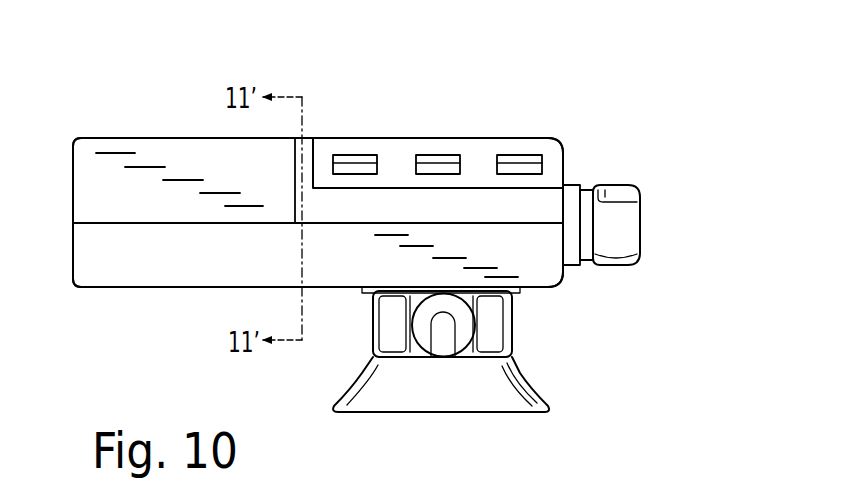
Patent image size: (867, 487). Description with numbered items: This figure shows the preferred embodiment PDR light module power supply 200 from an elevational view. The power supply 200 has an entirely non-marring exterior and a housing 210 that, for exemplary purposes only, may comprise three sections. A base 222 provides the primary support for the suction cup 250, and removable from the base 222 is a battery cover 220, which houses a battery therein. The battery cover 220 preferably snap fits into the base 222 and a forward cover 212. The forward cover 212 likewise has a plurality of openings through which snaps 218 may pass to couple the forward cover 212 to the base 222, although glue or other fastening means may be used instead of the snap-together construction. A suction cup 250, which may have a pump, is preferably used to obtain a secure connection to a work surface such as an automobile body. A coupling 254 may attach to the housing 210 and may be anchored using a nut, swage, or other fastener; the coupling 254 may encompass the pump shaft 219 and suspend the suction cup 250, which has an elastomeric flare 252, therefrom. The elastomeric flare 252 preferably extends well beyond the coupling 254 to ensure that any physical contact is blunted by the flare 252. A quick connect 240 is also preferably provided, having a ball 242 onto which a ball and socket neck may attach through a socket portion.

The PDR light module power supply 200 is at (489, 63).
The housing 210 is at (523, 134).
The forward cover 212 is at (389, 138).
The snaps 218 is at (498, 166).
The battery cover 220 is at (114, 157).
The base 222 is at (131, 272).
The quick connect 240 is at (598, 183).
The ball 242 is at (612, 254).
The suction cup 250 is at (342, 386).
The elastomeric flare 252 is at (452, 402).
The coupling 254 is at (507, 303).
The pump shaft 219 is at (460, 337).